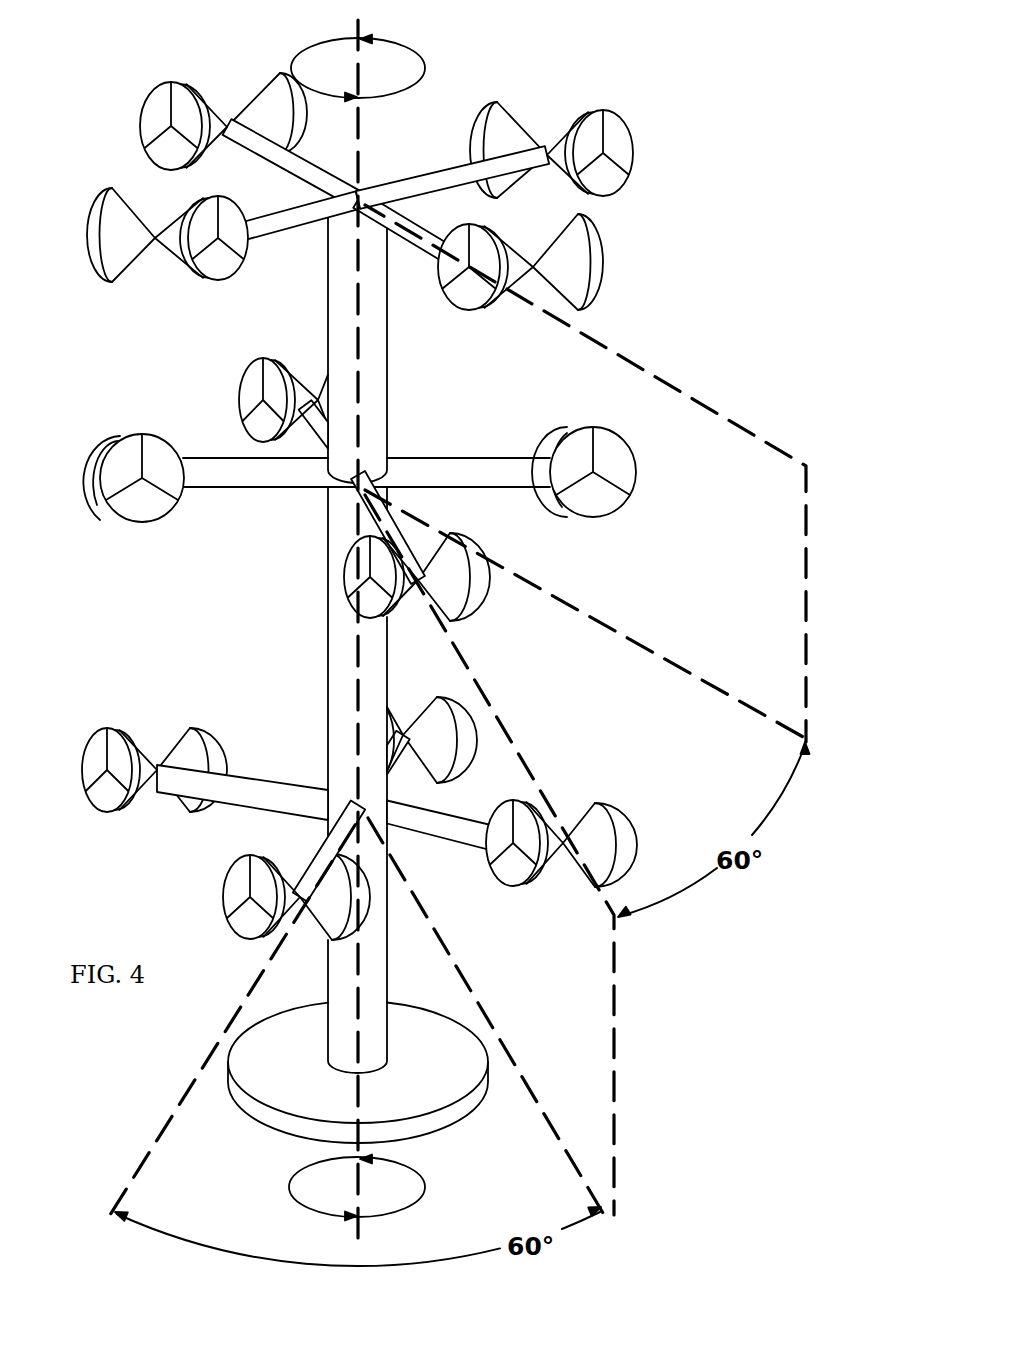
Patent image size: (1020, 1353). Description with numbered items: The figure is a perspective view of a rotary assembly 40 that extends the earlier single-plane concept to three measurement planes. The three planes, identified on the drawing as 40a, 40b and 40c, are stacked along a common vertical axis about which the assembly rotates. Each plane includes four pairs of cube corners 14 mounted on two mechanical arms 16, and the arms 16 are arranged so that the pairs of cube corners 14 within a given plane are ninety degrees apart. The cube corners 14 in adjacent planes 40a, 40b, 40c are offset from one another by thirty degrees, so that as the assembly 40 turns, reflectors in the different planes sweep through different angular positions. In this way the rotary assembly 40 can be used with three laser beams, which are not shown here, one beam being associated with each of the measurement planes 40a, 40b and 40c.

The cube corners 14 is at (620, 147).
The mechanical arms 16 is at (442, 473).
The rotary assembly 40 is at (380, 608).
The upper antenna tier 40a is at (380, 211).
The middle antenna tier 40b is at (348, 489).
The lower antenna tier 40c is at (148, 862).